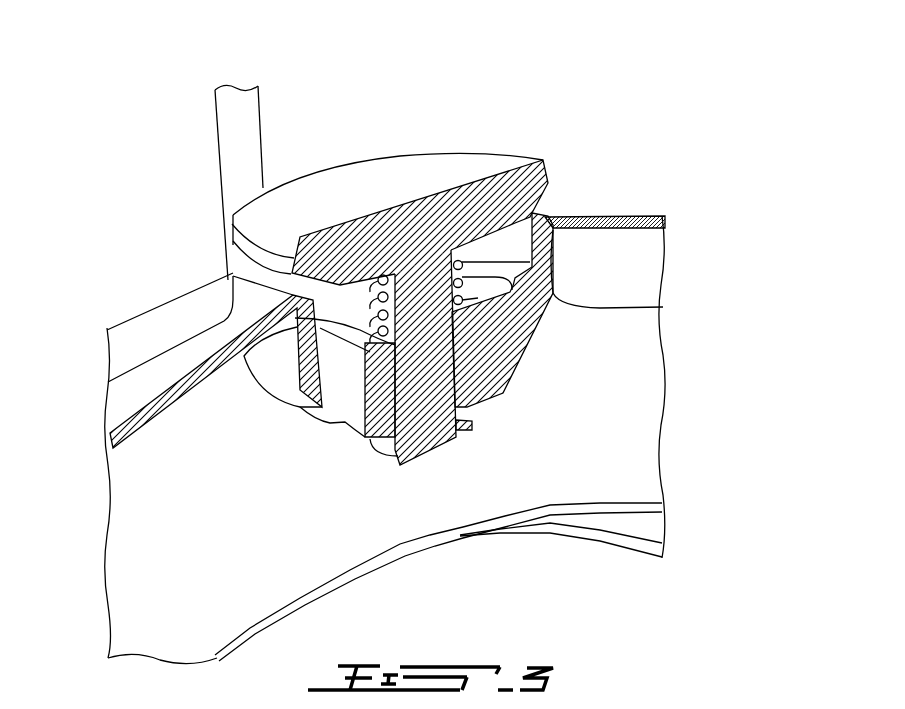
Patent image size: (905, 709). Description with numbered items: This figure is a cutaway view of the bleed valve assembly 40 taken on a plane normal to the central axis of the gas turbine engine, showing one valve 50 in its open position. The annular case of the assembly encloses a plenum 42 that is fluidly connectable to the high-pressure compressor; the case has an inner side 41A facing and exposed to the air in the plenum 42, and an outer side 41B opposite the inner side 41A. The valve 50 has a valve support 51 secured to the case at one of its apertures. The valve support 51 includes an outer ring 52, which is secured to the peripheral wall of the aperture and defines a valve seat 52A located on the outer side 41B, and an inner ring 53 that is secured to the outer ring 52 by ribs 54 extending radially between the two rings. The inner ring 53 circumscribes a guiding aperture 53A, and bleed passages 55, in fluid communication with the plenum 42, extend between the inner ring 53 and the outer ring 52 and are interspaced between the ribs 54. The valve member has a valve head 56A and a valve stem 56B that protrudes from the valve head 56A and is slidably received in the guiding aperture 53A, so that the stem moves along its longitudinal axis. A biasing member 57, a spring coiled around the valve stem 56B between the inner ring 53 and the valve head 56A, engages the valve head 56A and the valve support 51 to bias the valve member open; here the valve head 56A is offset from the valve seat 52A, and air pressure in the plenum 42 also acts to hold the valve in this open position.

The bleed valve assembly 40 is at (445, 374).
The inner side 41A is at (172, 402).
The outer side 41B is at (180, 363).
The plenum 42 is at (188, 573).
The valve 50 is at (431, 332).
The valve support 51 is at (562, 261).
The outer ring 52 is at (640, 307).
The valve seat 52A is at (530, 212).
The inner ring 53 is at (380, 438).
The guiding aperture 53A is at (463, 370).
The ribs 54 is at (520, 323).
The bleed passages 55 is at (334, 388).
The valve head 56A is at (393, 240).
The valve stem 56B is at (441, 458).
The biasing member 57 is at (365, 303).